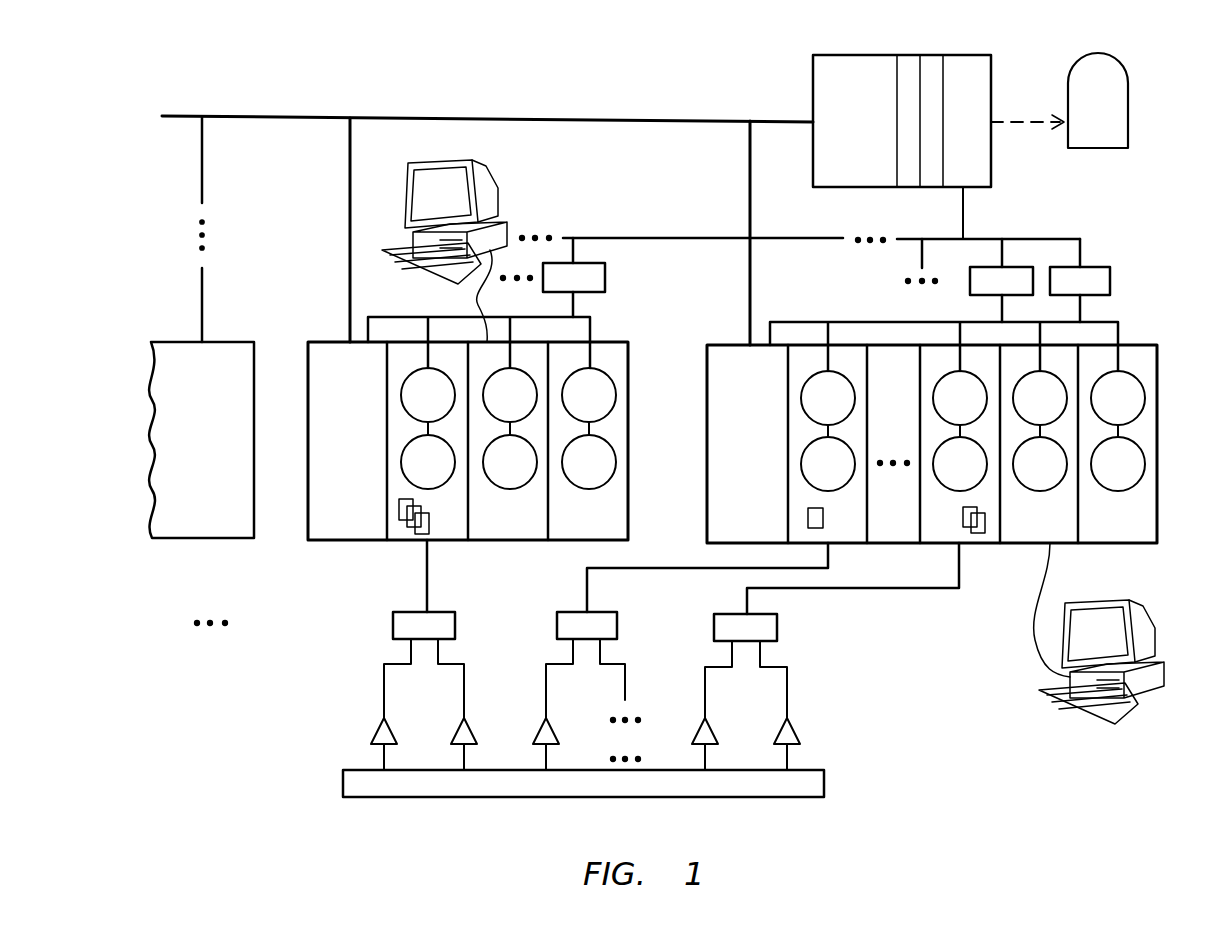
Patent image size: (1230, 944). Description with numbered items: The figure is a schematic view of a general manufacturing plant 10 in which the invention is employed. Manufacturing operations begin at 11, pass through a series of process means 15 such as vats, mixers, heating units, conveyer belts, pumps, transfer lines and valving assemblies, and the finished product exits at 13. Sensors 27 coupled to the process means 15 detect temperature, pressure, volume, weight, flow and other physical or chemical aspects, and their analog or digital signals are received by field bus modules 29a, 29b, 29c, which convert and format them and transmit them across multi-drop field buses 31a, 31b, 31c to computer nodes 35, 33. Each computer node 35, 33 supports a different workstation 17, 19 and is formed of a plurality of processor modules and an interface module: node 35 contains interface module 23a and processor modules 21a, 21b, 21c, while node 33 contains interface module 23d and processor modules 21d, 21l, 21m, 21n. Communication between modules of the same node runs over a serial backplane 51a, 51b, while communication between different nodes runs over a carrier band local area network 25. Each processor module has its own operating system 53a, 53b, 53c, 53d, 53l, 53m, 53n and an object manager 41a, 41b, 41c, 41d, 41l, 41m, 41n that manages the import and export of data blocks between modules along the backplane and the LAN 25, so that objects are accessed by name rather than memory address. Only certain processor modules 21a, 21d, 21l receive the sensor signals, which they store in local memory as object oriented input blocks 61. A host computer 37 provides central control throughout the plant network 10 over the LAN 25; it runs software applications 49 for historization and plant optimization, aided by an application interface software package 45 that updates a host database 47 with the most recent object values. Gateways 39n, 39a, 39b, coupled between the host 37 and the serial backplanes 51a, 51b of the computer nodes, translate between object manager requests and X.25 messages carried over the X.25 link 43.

The manufacturing plant 10 is at (899, 645).
The manufacturing operations beginning 11 is at (325, 788).
The manufacturing operations exit 13 is at (862, 793).
The process means 15 is at (583, 783).
The workstation 17 is at (517, 204).
The workstation 19 is at (1179, 649).
The processor module 21a is at (445, 441).
The processor module 21b is at (525, 441).
The processor module 21c is at (598, 357).
The processor module 21d is at (850, 444).
The processor module 21l is at (960, 444).
The processor module 21m is at (1060, 444).
The processor module 21n is at (1140, 360).
The interface module 23a is at (360, 441).
The interface module 23d is at (760, 444).
The carrier band local area network 25 is at (598, 117).
The sensors 27 is at (546, 712).
The field bus module 29a is at (424, 665).
The field bus module 29b is at (585, 665).
The field bus module 29c is at (746, 666).
The field bus 31a is at (423, 590).
The field bus 31b is at (585, 590).
The field bus 31c is at (745, 602).
The computer node 33 is at (694, 450).
The computer node 35 is at (646, 399).
The host computer 37 is at (902, 121).
The gateway 39a is at (1001, 280).
The gateway 39b is at (1080, 280).
The gateway 39n is at (574, 277).
The object manager 41a is at (428, 462).
The object manager 41b is at (510, 462).
The object manager 41c is at (589, 462).
The object manager 41d is at (828, 464).
The object manager 41l is at (960, 464).
The object manager 41m is at (1040, 464).
The object manager 41n is at (1118, 464).
The X.25 link 43 is at (965, 212).
The application interface software package 45 is at (930, 65).
The host database 47 is at (1059, 100).
The software applications 49 is at (908, 70).
The serial backplane 51a is at (590, 317).
The serial backplane 51b is at (816, 320).
The operating system 53a is at (428, 401).
The operating system 53b is at (510, 401).
The operating system 53c is at (589, 401).
The operating system 53d is at (828, 404).
The operating system 53l is at (960, 404).
The operating system 53m is at (1040, 404).
The operating system 53n is at (1118, 404).
The input block 61 is at (429, 524).